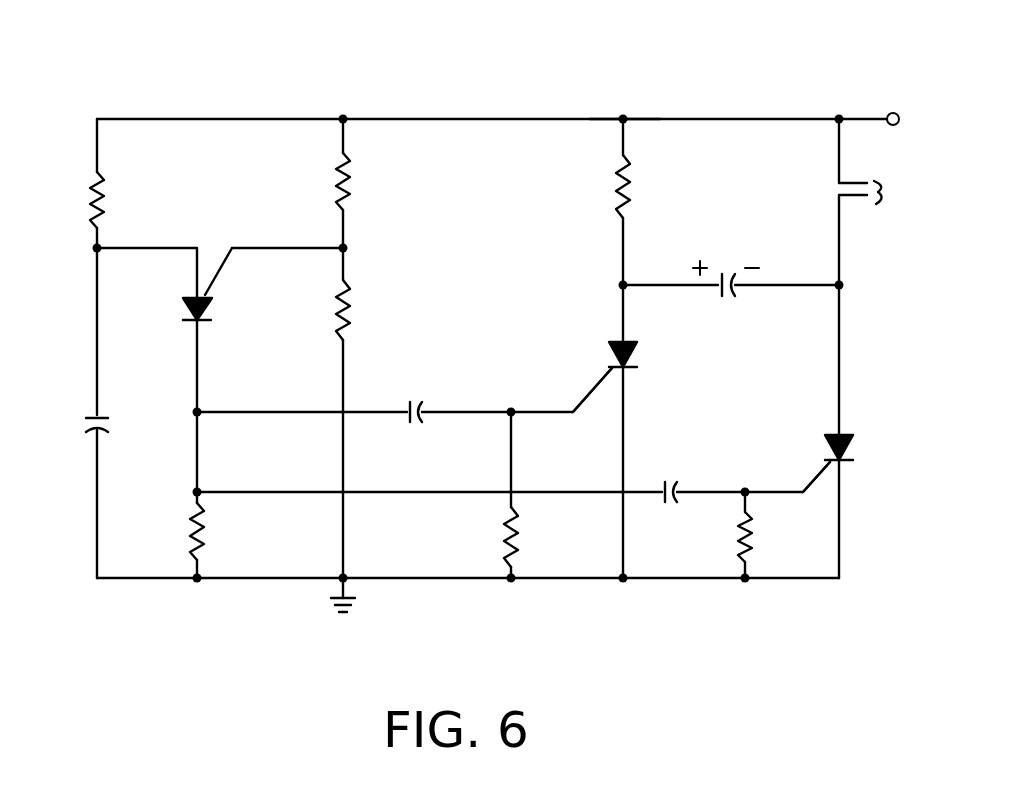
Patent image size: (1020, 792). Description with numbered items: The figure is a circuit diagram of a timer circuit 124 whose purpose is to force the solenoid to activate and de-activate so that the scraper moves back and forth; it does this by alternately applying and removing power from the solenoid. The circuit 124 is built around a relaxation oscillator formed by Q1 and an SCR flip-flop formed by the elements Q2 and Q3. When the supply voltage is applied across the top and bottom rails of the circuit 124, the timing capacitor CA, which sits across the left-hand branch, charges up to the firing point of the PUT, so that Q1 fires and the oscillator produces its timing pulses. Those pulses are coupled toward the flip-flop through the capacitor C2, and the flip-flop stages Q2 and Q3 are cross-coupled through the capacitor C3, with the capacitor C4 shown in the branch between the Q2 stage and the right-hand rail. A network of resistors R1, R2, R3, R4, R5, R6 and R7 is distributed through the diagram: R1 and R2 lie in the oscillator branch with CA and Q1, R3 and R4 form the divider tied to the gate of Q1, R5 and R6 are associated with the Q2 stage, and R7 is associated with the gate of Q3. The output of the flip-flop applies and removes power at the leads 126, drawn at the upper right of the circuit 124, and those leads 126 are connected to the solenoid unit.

The circuit 124 is at (612, 100).
The leads 126 is at (889, 190).
The resistor R1 is at (71, 200).
The resistor R2 is at (217, 531).
The resistor R3 is at (323, 181).
The resistor R4 is at (316, 310).
The resistor R5 is at (491, 537).
The resistor R6 is at (602, 186).
The resistor R7 is at (762, 537).
The capacitor C2 is at (414, 396).
The capacitor C3 is at (664, 512).
The capacitor C4 is at (726, 250).
The timing capacitor CA is at (76, 423).
The relaxation oscillator element Q1 is at (207, 261).
The SCR flip-flop element Q2 is at (591, 368).
The SCR flip-flop element Q3 is at (853, 459).